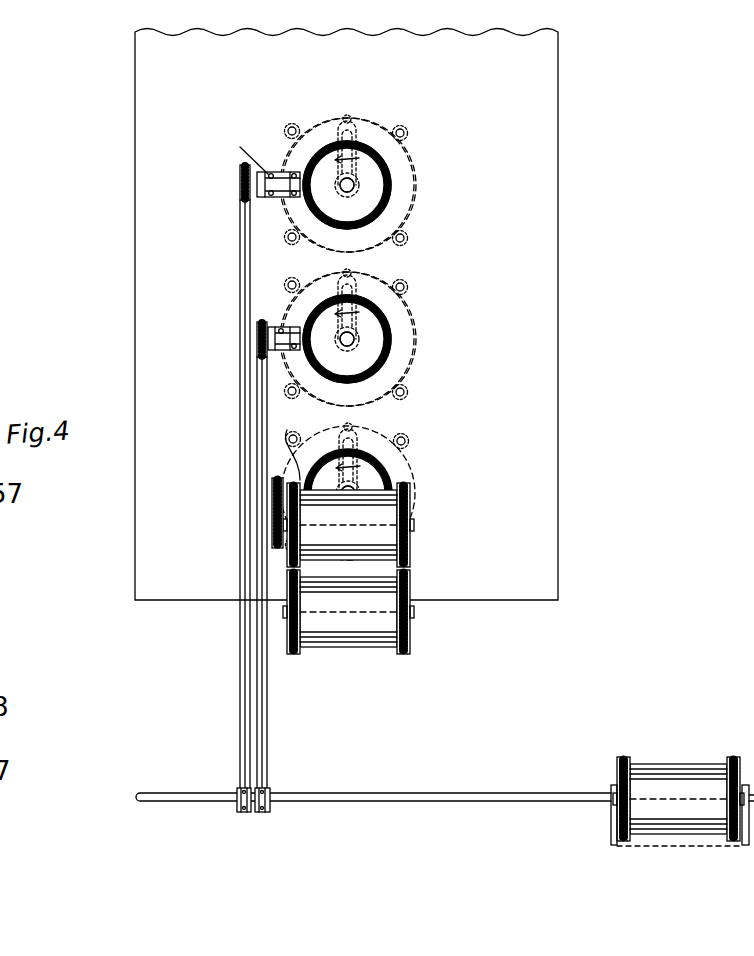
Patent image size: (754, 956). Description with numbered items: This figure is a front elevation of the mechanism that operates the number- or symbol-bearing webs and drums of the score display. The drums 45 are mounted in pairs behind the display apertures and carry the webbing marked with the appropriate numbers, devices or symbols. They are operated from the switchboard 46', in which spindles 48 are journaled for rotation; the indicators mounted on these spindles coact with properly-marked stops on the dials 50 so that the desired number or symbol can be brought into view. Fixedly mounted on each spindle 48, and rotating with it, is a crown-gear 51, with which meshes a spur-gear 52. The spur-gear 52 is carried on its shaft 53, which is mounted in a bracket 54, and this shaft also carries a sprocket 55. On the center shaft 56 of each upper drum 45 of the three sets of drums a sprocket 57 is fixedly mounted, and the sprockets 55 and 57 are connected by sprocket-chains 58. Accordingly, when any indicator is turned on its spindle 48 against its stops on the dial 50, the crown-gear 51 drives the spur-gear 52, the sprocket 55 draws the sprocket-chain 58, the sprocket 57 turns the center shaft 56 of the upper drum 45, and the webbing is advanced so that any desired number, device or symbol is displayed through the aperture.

The drums 45 is at (363, 518).
The switchboard 46' is at (384, 315).
The spindles 48 is at (355, 183).
The dials 50 is at (377, 118).
The crown-gear 51 is at (390, 200).
The spur-gear 52 is at (345, 252).
The shaft 53 is at (278, 180).
The bracket 54 is at (262, 302).
The sprocket 55 is at (244, 183).
The center shaft 56 is at (180, 797).
The sprocket 57 is at (248, 800).
The sprocket-chains 58 is at (265, 404).